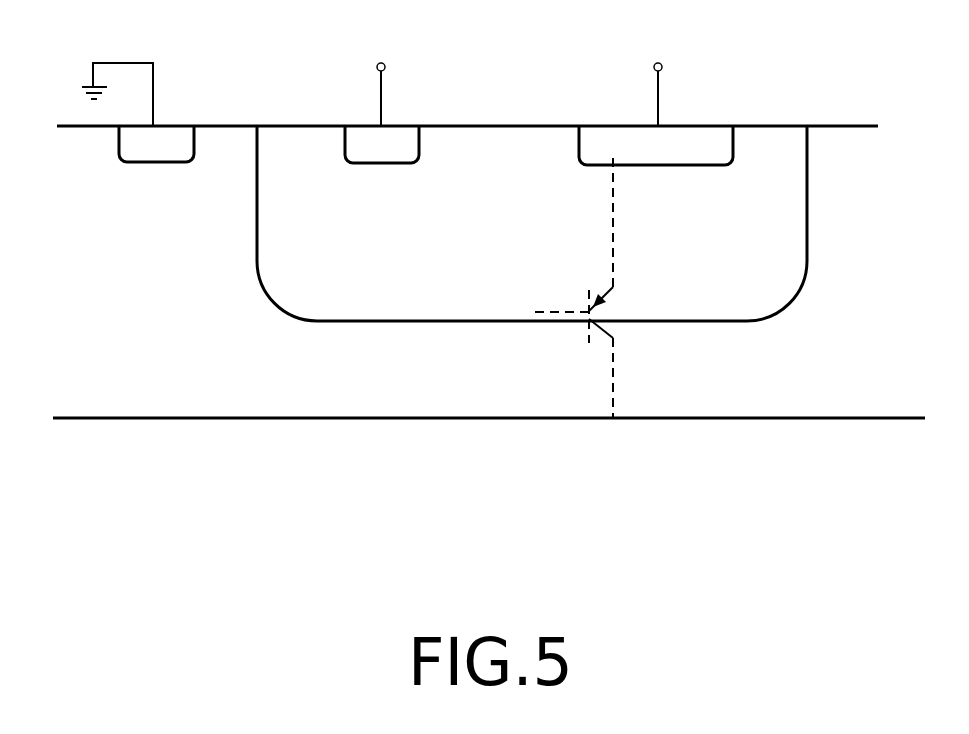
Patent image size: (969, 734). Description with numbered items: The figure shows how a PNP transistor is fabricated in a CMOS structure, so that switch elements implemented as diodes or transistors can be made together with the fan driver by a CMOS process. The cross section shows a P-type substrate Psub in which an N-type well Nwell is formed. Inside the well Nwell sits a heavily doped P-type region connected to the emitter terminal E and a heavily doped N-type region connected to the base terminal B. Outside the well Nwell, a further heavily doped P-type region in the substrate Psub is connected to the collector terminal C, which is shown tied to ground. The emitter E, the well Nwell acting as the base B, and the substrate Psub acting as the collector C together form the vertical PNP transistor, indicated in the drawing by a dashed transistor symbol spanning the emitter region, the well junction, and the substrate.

The collector C is at (138, 90).
The base B is at (382, 91).
The emitter E is at (656, 92).
The N-well Nwell is at (532, 223).
The P-sub Psub is at (489, 272).